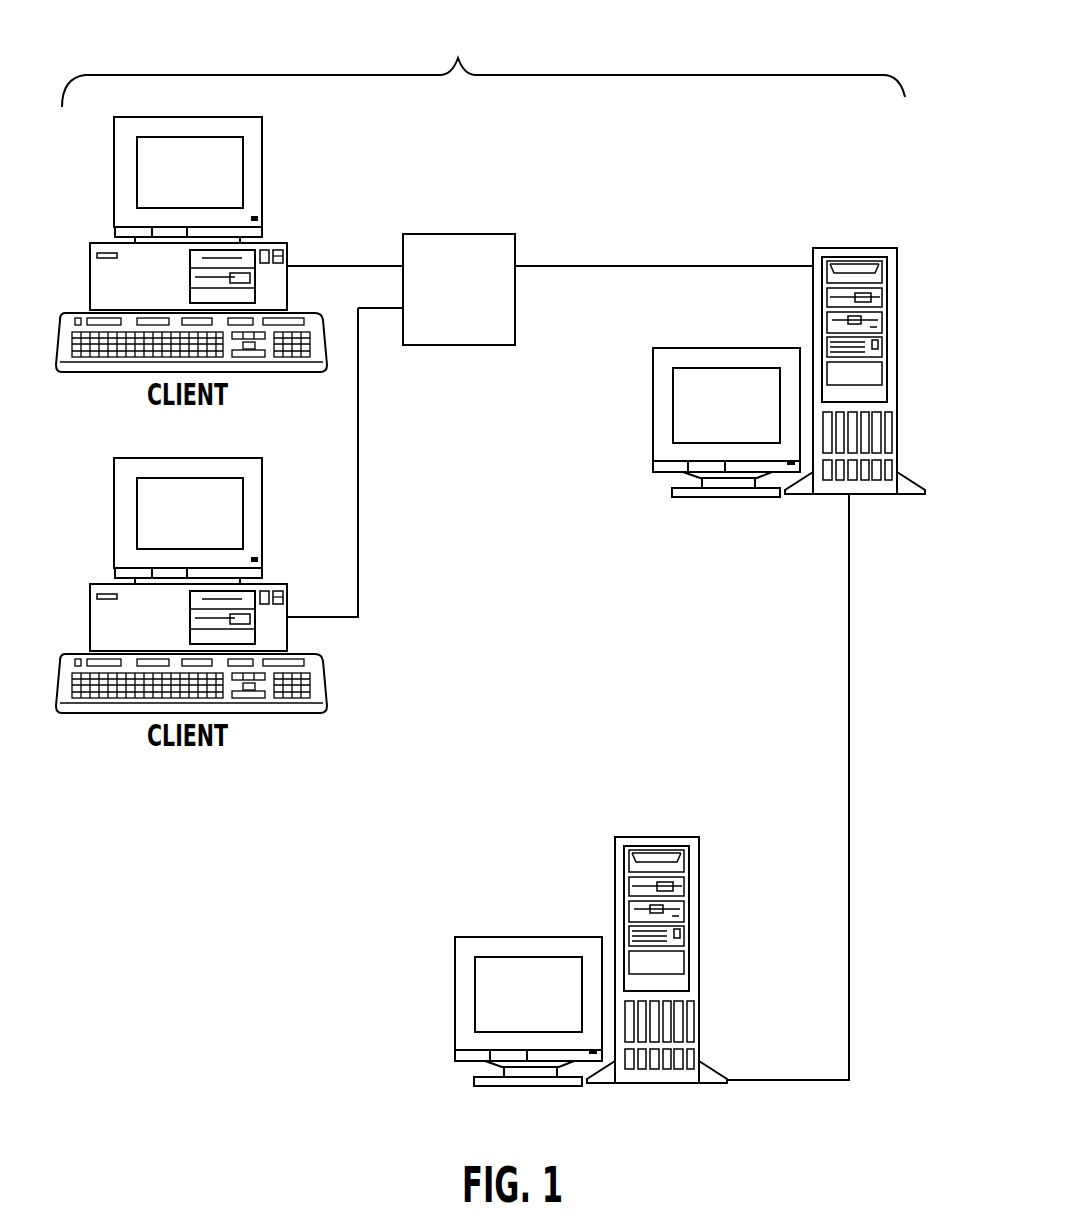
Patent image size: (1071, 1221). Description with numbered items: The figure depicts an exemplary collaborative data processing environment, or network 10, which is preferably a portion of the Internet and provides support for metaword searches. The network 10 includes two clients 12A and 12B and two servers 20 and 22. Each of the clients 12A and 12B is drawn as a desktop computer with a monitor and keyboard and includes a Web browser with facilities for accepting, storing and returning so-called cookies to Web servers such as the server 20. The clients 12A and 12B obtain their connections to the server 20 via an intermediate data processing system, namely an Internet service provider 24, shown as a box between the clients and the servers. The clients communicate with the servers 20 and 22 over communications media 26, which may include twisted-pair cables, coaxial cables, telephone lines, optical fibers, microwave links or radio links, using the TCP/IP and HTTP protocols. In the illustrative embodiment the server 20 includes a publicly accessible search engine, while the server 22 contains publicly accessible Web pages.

The network 10 is at (846, 58).
The client 12A is at (275, 243).
The client 12B is at (285, 585).
The Internet service provider 24 is at (454, 233).
The communications media 26 is at (648, 265).
The server 20 is at (845, 247).
The server 22 is at (650, 837).